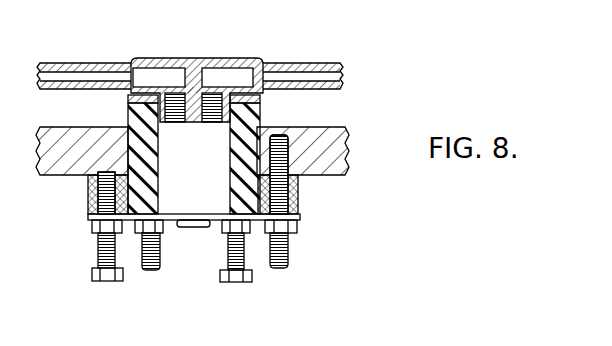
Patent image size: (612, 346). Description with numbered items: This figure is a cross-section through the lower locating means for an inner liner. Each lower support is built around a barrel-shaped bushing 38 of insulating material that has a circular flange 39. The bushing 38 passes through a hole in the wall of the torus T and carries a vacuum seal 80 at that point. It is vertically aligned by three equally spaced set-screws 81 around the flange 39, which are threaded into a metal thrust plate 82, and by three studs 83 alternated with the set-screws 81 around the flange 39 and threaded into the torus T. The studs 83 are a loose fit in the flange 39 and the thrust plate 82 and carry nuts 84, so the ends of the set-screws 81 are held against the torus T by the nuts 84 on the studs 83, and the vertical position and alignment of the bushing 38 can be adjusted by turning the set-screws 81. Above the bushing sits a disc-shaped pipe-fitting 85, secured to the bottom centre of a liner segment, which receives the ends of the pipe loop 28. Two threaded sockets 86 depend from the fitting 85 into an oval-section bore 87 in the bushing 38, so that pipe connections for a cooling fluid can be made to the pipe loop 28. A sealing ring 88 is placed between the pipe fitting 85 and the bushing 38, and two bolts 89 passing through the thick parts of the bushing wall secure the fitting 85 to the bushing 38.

The pipe loop 28 is at (80, 63).
The sealing ring 88 is at (143, 97).
The disc-shaped pipe-fitting 85 is at (200, 62).
The vacuum seal 80 is at (127, 133).
The barrel-shaped bushing 38 is at (259, 108).
The threaded sockets 86 is at (210, 122).
The oval-section bore 87 is at (208, 194).
The torus T is at (348, 143).
The metal thrust plate 82 is at (90, 182).
The circular flange 39 is at (295, 198).
The set-screws 81 is at (92, 223).
The studs 83 is at (152, 270).
The nuts 84 is at (165, 224).
The bolts 89 is at (203, 227).